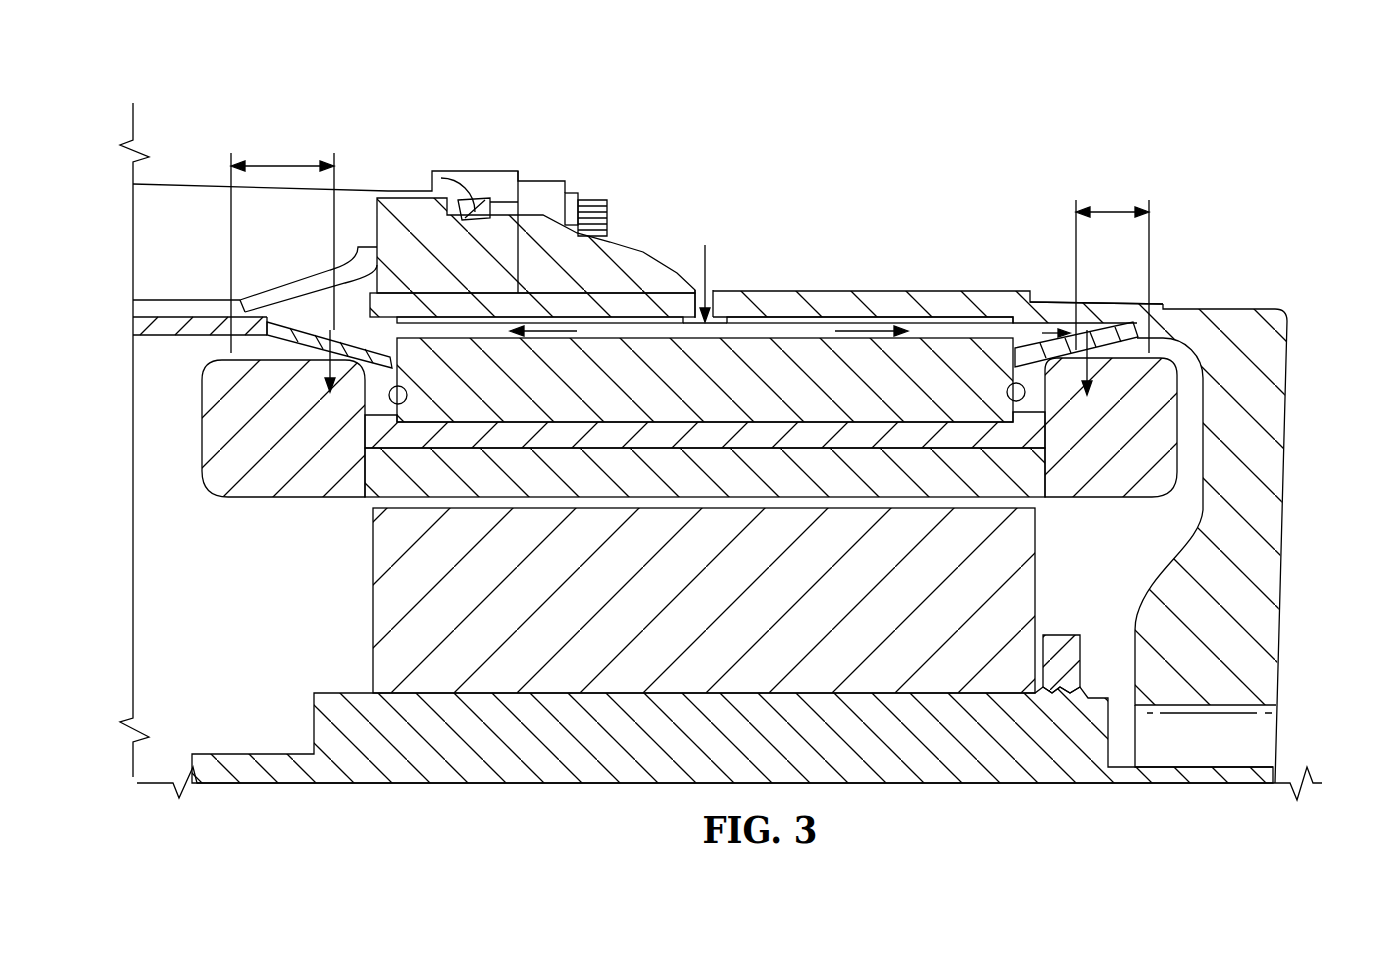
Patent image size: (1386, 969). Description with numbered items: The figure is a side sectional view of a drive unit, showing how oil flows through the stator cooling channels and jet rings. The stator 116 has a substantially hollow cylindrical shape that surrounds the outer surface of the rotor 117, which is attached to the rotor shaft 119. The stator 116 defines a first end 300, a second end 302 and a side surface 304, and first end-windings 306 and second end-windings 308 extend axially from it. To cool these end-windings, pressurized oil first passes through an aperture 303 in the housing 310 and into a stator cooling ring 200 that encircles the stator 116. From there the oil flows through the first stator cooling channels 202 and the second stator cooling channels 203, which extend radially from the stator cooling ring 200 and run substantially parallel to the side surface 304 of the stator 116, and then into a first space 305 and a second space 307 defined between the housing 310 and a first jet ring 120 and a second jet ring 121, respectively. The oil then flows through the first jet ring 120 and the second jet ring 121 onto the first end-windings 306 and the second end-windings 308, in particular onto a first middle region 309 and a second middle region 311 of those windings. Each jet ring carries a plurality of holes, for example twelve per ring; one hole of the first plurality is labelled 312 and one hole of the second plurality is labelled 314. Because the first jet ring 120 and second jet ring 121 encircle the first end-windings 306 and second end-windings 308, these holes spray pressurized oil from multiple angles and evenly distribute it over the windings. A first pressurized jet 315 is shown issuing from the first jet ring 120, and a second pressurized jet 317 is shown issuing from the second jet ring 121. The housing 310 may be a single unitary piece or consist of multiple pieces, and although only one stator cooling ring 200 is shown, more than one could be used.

The stator 116 is at (685, 396).
The rotor 117 is at (683, 612).
The rotor shaft 119 is at (683, 757).
The first jet ring 120 is at (340, 366).
The second jet ring 121 is at (1031, 333).
The stator cooling ring 200 is at (725, 318).
The first stator cooling channels 202 is at (590, 330).
The second stator cooling channels 203 is at (970, 337).
The first end 300 is at (405, 400).
The second end 302 is at (1010, 397).
The aperture 303 is at (692, 262).
The side surface 304 is at (780, 337).
The first space 305 is at (283, 306).
The first end-windings 306 is at (259, 444).
The second space 307 is at (1133, 306).
The second end-windings 308 is at (1090, 444).
The first middle region 309 is at (284, 165).
The housing 310 is at (427, 269).
The second middle region 311 is at (1112, 212).
The hole 312 is at (333, 277).
The hole 314 is at (1110, 317).
The first pressurized jet 315 is at (330, 368).
The second pressurized jet 317 is at (1088, 367).